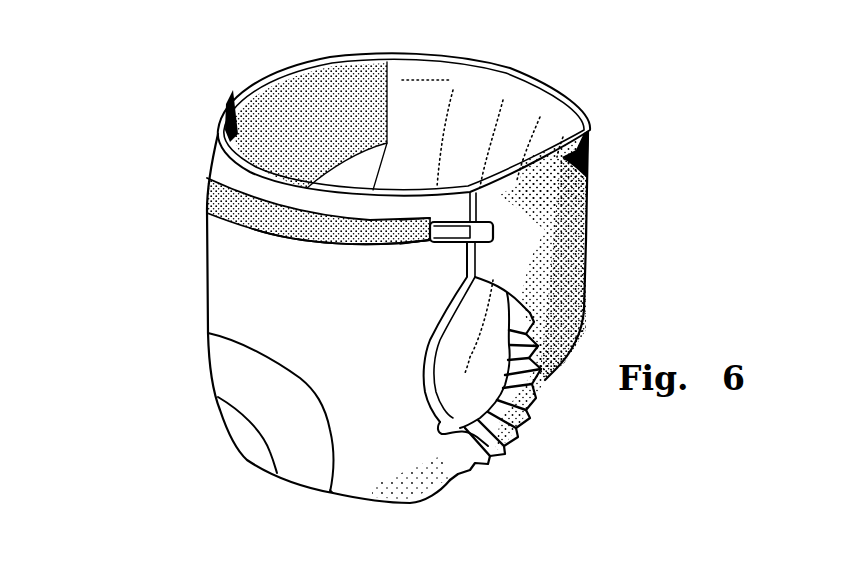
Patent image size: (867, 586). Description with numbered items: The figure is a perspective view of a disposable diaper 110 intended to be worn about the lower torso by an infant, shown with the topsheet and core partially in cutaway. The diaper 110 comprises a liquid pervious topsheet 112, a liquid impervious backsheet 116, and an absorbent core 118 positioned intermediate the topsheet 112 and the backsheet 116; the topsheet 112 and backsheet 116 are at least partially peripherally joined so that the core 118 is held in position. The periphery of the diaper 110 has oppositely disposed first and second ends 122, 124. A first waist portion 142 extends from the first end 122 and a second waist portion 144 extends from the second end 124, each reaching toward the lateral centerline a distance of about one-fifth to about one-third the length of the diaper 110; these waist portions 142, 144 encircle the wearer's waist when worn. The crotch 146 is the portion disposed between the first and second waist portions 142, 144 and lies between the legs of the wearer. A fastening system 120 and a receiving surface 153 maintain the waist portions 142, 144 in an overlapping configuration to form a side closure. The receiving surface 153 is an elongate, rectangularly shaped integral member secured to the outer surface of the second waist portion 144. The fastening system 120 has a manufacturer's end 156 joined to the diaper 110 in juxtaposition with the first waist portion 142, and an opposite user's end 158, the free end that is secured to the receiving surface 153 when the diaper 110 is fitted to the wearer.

The disposable diaper 110 is at (180, 102).
The liquid pervious topsheet 112 is at (497, 80).
The liquid impervious backsheet 116 is at (207, 253).
The absorbent core 118 is at (317, 468).
The fastening system 120 is at (512, 220).
The first end 122 is at (577, 103).
The second end 124 is at (273, 73).
The first waist portion 142 is at (583, 155).
The second waist portion 144 is at (215, 163).
The crotch 146 is at (433, 493).
The receiving surface 153 is at (328, 242).
The manufacturer's end 156 is at (495, 237).
The user's end 158 is at (413, 245).